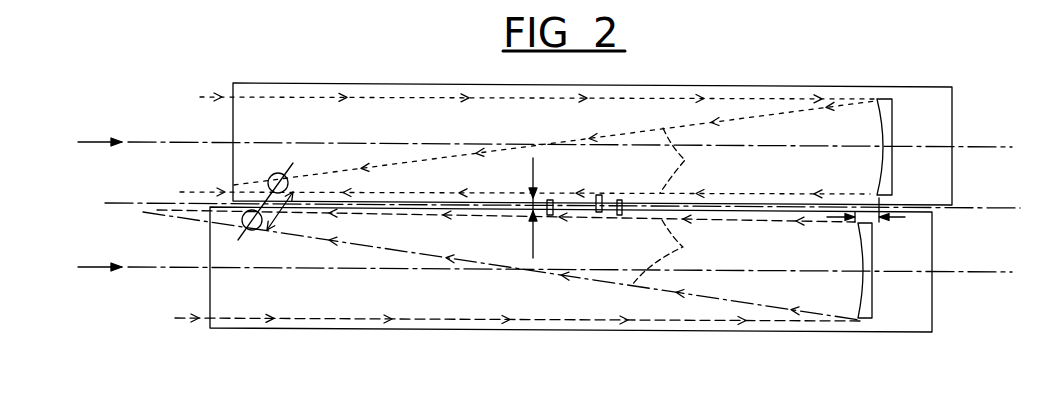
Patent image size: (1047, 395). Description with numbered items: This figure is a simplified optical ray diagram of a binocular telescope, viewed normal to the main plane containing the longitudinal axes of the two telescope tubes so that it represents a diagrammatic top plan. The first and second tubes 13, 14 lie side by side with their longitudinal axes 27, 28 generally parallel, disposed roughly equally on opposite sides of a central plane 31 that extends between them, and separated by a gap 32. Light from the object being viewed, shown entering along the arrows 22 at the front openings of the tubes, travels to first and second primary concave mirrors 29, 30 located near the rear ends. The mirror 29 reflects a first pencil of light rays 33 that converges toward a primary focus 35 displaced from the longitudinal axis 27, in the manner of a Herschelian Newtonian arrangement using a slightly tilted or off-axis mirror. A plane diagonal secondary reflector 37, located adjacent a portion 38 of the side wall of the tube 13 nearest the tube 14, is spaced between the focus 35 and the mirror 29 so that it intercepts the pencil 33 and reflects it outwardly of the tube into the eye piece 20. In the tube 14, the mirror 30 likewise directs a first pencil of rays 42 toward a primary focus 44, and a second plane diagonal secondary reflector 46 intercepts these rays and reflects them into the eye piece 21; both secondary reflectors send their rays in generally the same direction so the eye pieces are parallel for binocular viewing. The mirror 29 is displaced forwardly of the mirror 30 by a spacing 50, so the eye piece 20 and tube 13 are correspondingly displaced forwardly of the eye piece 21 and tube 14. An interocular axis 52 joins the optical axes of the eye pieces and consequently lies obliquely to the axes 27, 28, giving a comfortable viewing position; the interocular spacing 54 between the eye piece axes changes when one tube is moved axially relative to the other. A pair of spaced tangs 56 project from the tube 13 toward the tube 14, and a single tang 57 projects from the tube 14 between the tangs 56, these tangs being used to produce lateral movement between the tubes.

The first tube 13 is at (783, 334).
The second tube 14 is at (767, 86).
The eye piece 20 is at (253, 230).
The eye piece 21 is at (271, 176).
The optical axis / input beam direction 22 is at (107, 138).
The longitudinal axis 27 is at (940, 270).
The longitudinal axis 28 is at (968, 147).
The first primary concave mirror 29 is at (863, 295).
The second primary concave mirror 30 is at (890, 168).
The central plane 31 is at (990, 207).
The gap 32 is at (537, 169).
The first pencil of light rays 33 is at (672, 252).
The primary focus 35 is at (150, 209).
The plane diagonal secondary reflector 37 is at (279, 234).
The portion of the side wall 38 is at (243, 207).
The first pencil of rays 42 is at (686, 160).
The primary focus 44 is at (181, 190).
The second plane diagonal secondary reflector 46 is at (280, 174).
The forward displacement or spacing 50 is at (898, 218).
The interocular axis 52 is at (291, 174).
The interocular spacing 54 is at (278, 218).
The pair of spaced tangs 56 is at (619, 215).
The single tang 57 is at (598, 195).